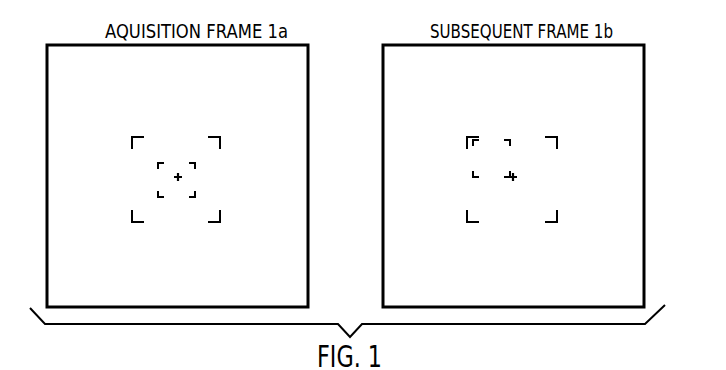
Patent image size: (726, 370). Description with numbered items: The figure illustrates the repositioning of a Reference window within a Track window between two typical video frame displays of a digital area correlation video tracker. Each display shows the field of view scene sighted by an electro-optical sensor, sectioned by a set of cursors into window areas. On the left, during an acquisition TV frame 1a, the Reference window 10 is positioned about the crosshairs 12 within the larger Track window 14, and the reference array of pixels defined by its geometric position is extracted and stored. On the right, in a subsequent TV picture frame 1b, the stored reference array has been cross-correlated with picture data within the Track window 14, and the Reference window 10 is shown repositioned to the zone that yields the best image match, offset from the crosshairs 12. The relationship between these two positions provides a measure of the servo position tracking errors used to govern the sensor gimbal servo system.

The acquisition TV frame 1a is at (317, 49).
The subsequent TV picture frame 1b is at (644, 66).
The Reference window 10 is at (170, 189).
The crosshairs 12 is at (183, 180).
The Track window 14 is at (213, 160).